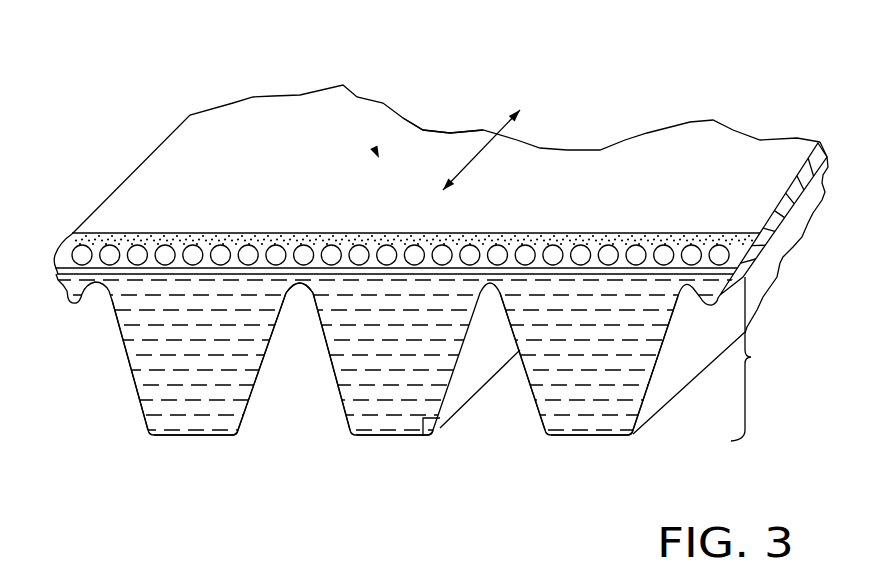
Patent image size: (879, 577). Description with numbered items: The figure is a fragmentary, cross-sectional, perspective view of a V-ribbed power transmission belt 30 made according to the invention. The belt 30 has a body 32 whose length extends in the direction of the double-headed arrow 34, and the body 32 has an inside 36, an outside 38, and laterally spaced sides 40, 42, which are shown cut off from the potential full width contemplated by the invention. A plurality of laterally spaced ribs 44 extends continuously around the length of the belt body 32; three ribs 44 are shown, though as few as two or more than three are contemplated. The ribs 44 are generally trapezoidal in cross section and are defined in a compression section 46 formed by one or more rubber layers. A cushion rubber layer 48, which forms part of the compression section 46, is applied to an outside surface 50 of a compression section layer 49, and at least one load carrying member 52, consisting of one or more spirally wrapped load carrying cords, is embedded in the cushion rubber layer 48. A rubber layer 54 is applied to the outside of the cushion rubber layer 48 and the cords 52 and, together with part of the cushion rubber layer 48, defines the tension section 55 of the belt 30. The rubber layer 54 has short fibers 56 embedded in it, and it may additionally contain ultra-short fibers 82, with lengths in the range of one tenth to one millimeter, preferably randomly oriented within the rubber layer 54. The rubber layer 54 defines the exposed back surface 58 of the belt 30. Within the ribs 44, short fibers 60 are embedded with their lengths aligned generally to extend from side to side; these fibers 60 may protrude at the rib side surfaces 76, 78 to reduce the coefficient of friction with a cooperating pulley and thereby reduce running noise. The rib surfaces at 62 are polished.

The V-ribbed belt 30 is at (425, 277).
The belt body 32 is at (698, 195).
The double-headed arrow 34 is at (470, 148).
The inside 36 is at (365, 450).
The outside 38 is at (373, 147).
The side 40 is at (40, 278).
The side 42 is at (810, 250).
The ribs 44 is at (200, 438).
The compression section 46 is at (761, 359).
The cushion rubber layer 48 is at (295, 267).
The compression section layer 49 is at (327, 350).
The outside surface 50 is at (125, 270).
The load carrying member 52 is at (193, 257).
The rubber layer 54 is at (585, 233).
The tension section 55 is at (746, 248).
The short fibers 56 is at (345, 241).
The back surface 58 is at (433, 151).
The short fibers 60 is at (547, 373).
The rib surfaces 62 is at (217, 438).
The rib side surface 76 is at (127, 353).
The rib side surface 78 is at (255, 388).
The ultra-short fibers 82 is at (240, 233).